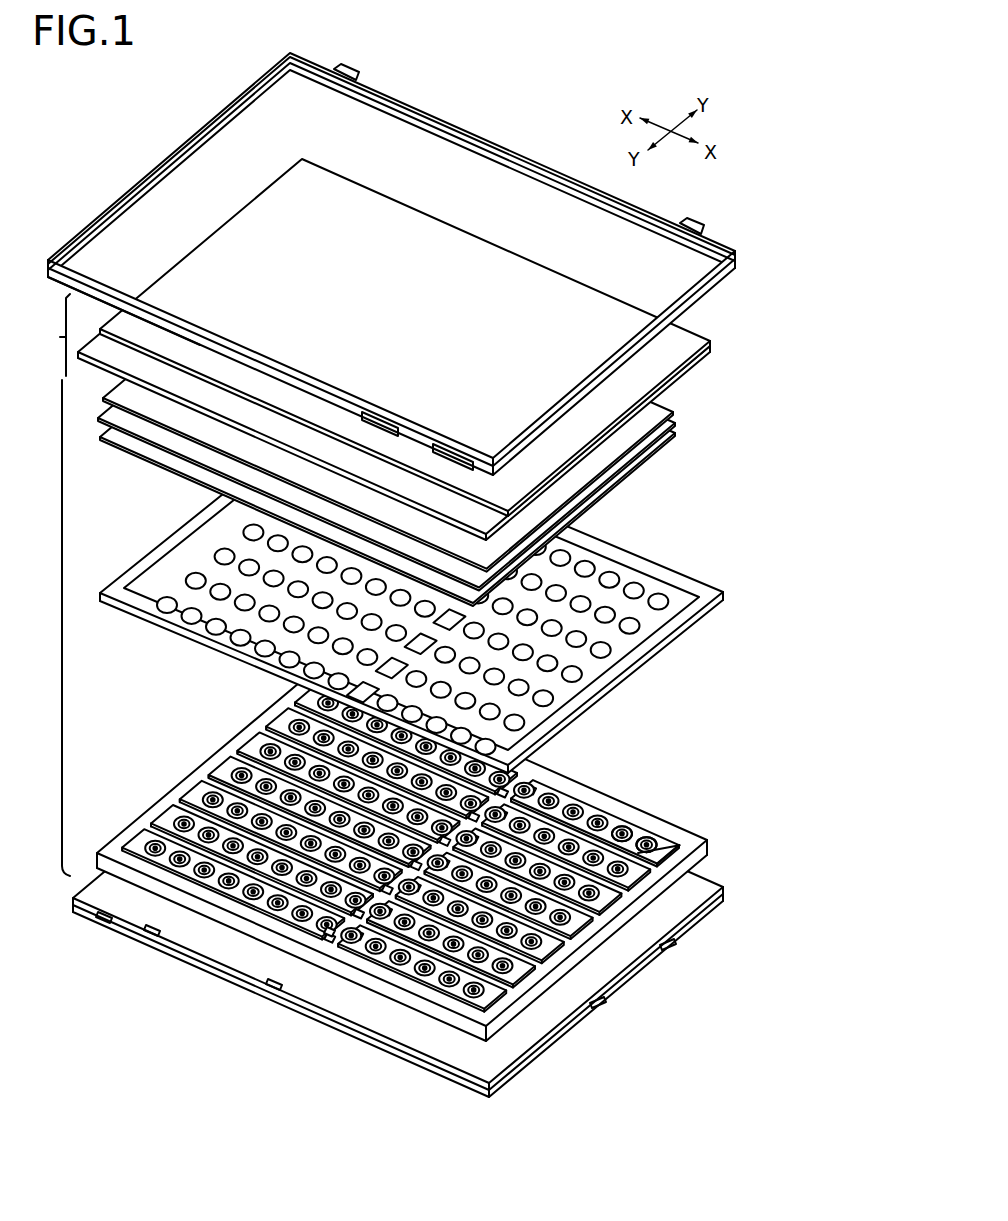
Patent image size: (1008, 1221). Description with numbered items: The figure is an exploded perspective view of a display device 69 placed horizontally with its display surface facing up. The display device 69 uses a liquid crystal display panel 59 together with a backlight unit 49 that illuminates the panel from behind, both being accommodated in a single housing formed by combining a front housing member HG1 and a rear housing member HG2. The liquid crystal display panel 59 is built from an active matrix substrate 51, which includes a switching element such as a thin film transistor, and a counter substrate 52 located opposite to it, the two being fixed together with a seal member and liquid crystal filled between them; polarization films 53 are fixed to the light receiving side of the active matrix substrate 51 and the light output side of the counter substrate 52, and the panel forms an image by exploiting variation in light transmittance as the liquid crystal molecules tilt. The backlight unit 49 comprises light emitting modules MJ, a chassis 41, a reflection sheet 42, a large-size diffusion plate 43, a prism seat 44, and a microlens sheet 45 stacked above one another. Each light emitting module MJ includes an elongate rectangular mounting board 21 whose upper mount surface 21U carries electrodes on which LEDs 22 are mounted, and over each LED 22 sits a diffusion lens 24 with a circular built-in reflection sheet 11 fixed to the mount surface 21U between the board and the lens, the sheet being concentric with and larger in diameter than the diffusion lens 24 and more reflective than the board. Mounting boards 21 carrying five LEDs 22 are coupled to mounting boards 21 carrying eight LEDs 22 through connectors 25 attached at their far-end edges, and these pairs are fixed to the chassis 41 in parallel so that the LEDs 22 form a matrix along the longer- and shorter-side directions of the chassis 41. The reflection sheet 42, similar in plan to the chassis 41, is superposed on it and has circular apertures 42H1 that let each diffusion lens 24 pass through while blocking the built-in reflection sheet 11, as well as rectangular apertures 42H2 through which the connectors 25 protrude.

The display device 69 is at (162, 138).
The front housing member HG1 is at (54, 258).
The polarization film 53 is at (390, 349).
The counter substrate 52 is at (101, 328).
The active matrix substrate 51 is at (92, 331).
The liquid crystal display panel 59 is at (53, 335).
The microlens sheet 45 is at (103, 397).
The prism seat 44 is at (98, 419).
The large-size diffusion plate 43 is at (100, 438).
The reflection sheet 42 is at (396, 596).
The aperture 42H1 is at (226, 549).
The rectangular aperture 42H2 is at (286, 688).
The backlight unit 49 is at (52, 628).
The chassis 41 is at (97, 853).
The mounting board 21 is at (700, 845).
The mount surface 21U is at (668, 844).
The LED 22 is at (659, 836).
The diffusion lens 24 is at (641, 838).
The built-in reflection sheet 11 is at (665, 842).
The light emitting module MJ is at (736, 818).
The connector 25 is at (338, 940).
The rear housing member HG2 is at (73, 903).